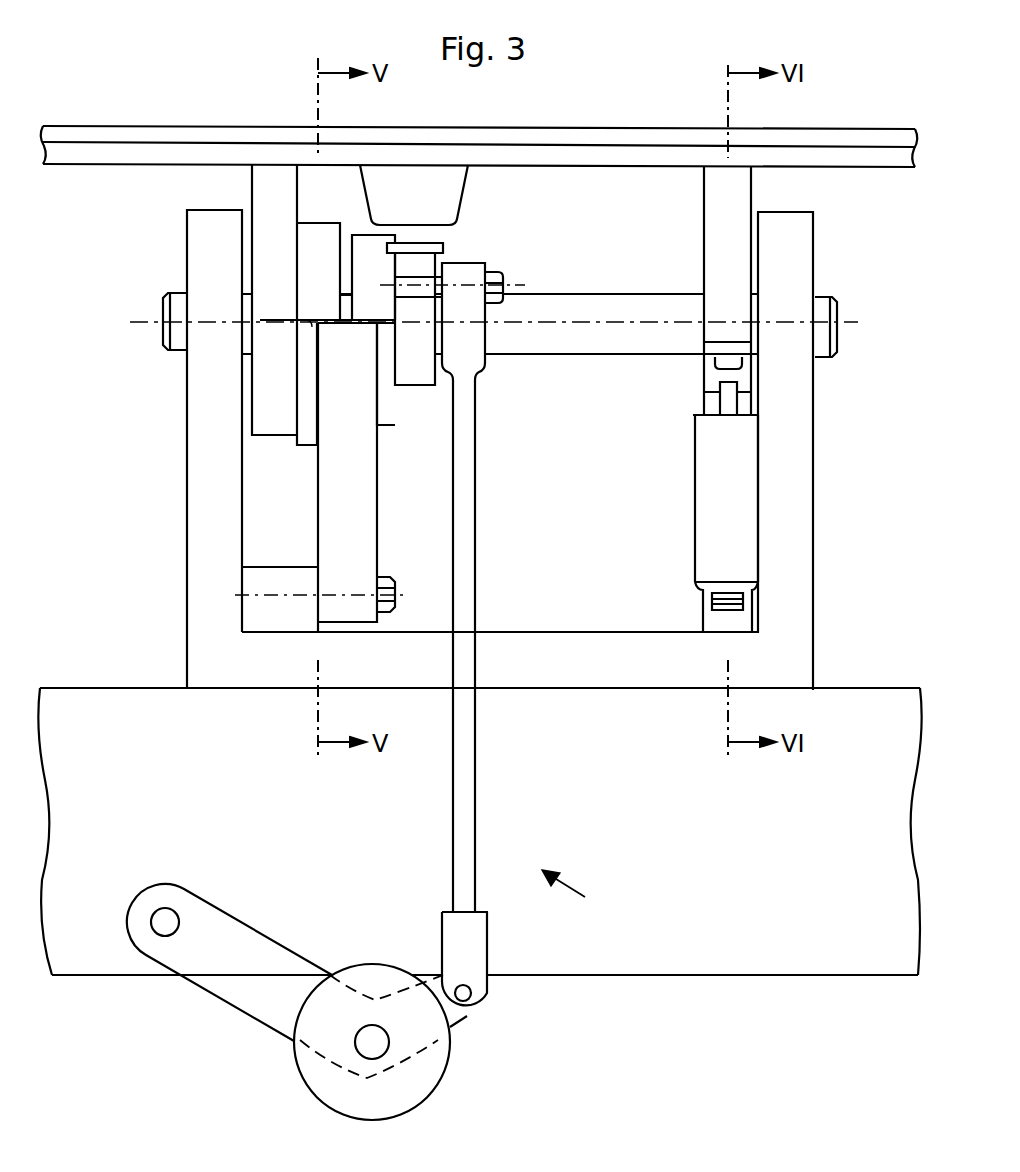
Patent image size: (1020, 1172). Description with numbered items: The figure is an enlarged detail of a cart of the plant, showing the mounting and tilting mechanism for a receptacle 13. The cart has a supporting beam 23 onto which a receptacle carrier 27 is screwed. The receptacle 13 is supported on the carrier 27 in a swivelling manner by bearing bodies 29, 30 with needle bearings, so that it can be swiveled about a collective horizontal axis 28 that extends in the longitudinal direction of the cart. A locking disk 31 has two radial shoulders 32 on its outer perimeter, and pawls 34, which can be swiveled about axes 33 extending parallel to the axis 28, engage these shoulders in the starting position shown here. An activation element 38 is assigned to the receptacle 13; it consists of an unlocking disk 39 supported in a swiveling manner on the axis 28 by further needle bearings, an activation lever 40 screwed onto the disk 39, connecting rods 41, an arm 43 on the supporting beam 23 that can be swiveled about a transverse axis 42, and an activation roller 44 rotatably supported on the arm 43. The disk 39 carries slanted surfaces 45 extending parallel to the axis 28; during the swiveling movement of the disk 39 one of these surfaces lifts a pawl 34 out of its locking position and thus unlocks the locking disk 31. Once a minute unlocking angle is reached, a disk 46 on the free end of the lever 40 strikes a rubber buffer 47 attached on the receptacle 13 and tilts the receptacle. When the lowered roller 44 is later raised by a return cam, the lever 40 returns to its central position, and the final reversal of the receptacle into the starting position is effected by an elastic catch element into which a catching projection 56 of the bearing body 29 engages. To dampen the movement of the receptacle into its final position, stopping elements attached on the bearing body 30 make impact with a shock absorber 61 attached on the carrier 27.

The receptacle 13 is at (222, 124).
The supporting beam 23 is at (710, 957).
The receptacle carrier 27 is at (795, 528).
The horizontal axis 28 is at (168, 342).
The bearing body 29 is at (262, 278).
The bearing body 30 is at (738, 237).
The locking disk 31 is at (305, 237).
The radial shoulder 32 is at (311, 325).
The pawl axis 33 is at (390, 592).
The pawl 34 is at (330, 472).
The activation element 38 is at (579, 895).
The unlocking disk 39 is at (358, 258).
The activation lever 40 is at (425, 368).
The connecting rod 41 is at (475, 552).
The transverse axis 42 is at (163, 925).
The arm 43 is at (225, 957).
The activation roller 44 is at (320, 1078).
The slanted surface 45 is at (368, 323).
The disk 46 is at (427, 248).
The rubber buffer 47 is at (430, 178).
The catching projection 56 is at (737, 377).
The shock absorber 61 is at (729, 405).